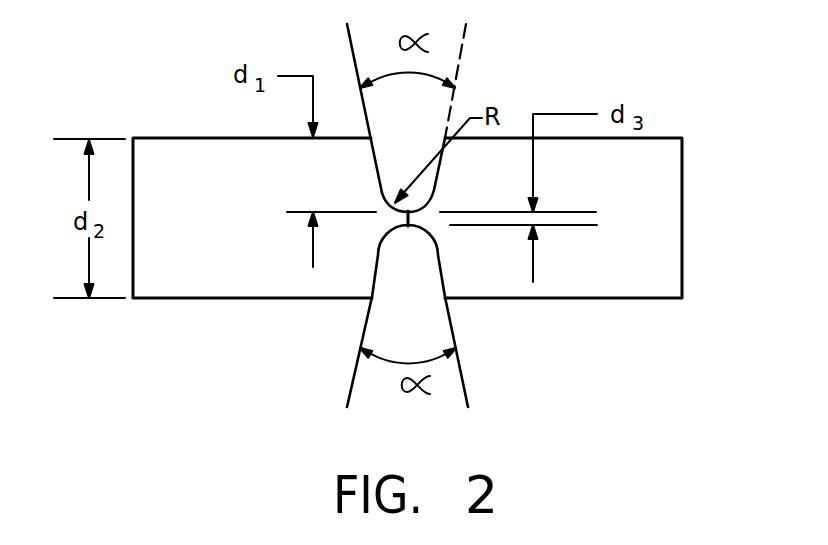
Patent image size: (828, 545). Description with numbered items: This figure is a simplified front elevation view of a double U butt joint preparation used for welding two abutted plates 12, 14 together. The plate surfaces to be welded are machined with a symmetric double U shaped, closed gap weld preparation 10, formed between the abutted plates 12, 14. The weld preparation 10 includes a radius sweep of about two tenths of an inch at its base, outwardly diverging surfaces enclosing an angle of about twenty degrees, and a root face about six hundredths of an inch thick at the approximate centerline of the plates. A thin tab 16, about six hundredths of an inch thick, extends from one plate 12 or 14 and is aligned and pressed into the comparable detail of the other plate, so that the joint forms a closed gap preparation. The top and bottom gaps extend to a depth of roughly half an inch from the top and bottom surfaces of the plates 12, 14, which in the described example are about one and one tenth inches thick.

The double U weld preparation 10 is at (388, 172).
The plate 12 is at (222, 287).
The plate 14 is at (587, 285).
The tab 16 is at (402, 220).